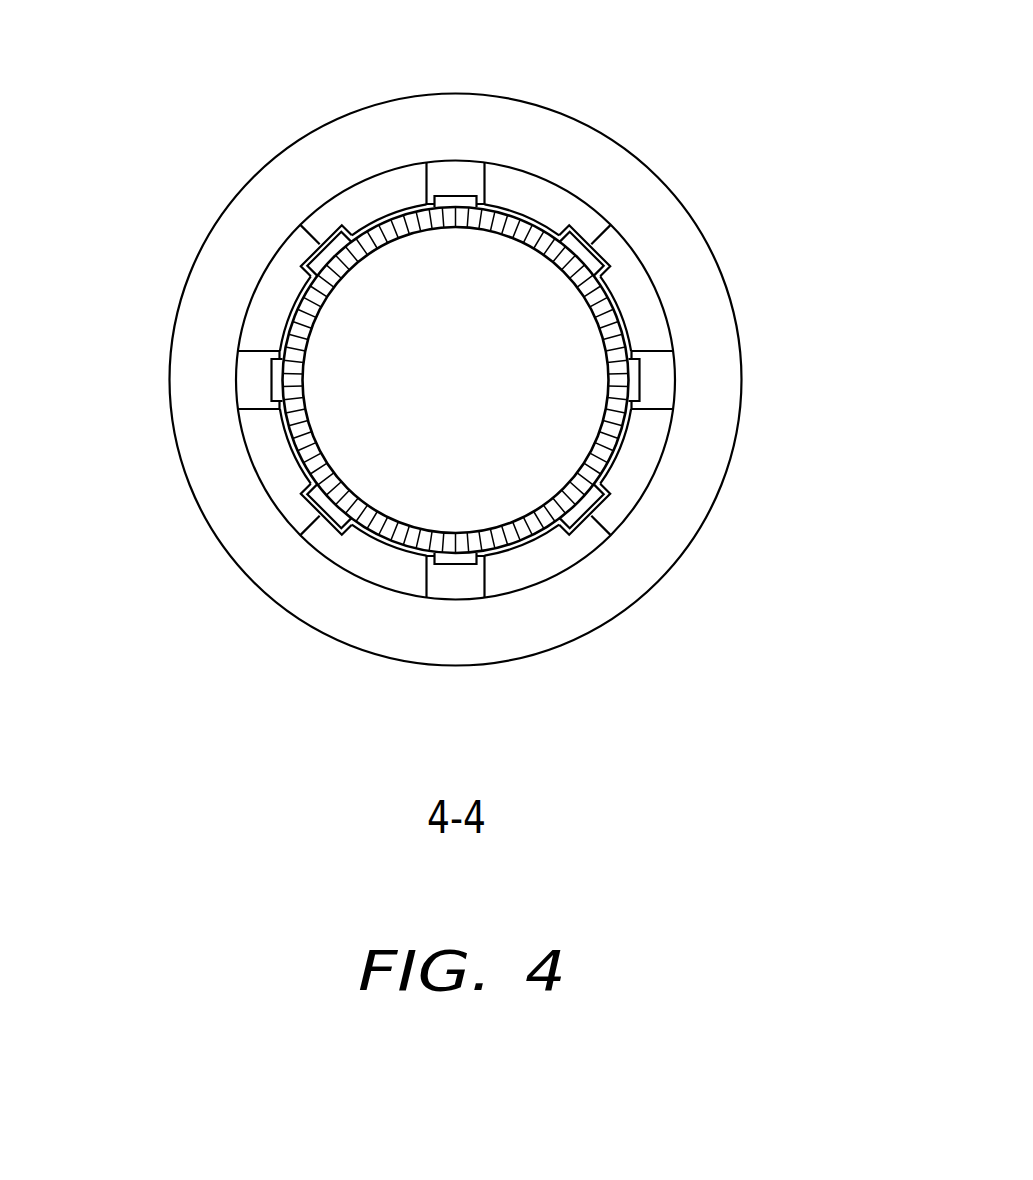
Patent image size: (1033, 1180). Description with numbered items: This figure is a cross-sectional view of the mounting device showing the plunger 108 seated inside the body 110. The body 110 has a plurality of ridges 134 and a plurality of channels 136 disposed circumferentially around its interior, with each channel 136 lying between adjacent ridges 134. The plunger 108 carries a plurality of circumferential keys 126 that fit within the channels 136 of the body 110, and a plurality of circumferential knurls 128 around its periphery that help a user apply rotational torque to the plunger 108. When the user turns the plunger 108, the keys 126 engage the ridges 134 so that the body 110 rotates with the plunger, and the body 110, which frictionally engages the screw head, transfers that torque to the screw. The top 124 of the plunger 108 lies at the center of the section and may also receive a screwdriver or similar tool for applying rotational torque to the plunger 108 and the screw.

The plunger 108 is at (379, 212).
The body 110 is at (631, 138).
The top 124 is at (503, 423).
The circumferential keys 126 is at (590, 262).
The circumferential knurls 128 is at (527, 550).
The ridges 134 is at (512, 185).
The channels 136 is at (440, 163).